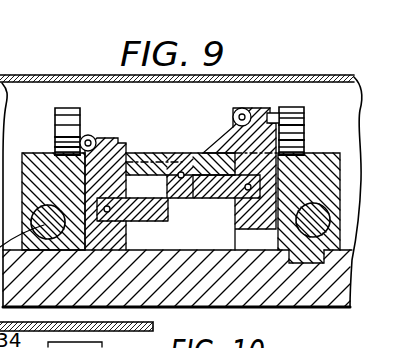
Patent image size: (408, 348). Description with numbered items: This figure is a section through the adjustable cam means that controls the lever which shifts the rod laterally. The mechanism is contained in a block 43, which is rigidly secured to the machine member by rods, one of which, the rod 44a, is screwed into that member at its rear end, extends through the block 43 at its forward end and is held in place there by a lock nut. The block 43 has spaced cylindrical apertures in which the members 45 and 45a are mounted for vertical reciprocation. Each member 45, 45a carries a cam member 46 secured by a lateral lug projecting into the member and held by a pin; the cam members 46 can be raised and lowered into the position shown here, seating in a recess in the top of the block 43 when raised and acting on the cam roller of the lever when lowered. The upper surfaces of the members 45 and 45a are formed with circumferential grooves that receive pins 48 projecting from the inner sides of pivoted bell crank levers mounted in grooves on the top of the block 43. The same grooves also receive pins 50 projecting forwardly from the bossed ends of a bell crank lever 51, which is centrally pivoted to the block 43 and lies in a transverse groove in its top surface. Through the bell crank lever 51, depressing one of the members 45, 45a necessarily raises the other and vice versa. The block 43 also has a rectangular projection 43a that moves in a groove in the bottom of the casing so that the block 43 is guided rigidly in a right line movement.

The block 43 is at (32, 163).
The rectangular projection 43a is at (312, 257).
The rod 44a is at (312, 204).
The member 45 is at (99, 150).
The member 45a is at (254, 110).
The cam member 46 is at (143, 221).
The pin 48 is at (272, 114).
The pin 50 is at (89, 135).
The bell crank lever 51 is at (152, 162).